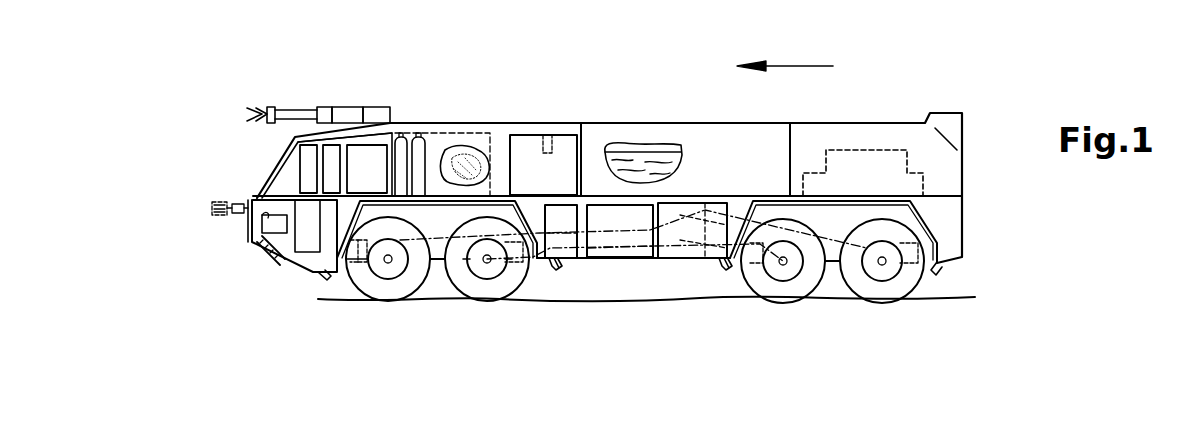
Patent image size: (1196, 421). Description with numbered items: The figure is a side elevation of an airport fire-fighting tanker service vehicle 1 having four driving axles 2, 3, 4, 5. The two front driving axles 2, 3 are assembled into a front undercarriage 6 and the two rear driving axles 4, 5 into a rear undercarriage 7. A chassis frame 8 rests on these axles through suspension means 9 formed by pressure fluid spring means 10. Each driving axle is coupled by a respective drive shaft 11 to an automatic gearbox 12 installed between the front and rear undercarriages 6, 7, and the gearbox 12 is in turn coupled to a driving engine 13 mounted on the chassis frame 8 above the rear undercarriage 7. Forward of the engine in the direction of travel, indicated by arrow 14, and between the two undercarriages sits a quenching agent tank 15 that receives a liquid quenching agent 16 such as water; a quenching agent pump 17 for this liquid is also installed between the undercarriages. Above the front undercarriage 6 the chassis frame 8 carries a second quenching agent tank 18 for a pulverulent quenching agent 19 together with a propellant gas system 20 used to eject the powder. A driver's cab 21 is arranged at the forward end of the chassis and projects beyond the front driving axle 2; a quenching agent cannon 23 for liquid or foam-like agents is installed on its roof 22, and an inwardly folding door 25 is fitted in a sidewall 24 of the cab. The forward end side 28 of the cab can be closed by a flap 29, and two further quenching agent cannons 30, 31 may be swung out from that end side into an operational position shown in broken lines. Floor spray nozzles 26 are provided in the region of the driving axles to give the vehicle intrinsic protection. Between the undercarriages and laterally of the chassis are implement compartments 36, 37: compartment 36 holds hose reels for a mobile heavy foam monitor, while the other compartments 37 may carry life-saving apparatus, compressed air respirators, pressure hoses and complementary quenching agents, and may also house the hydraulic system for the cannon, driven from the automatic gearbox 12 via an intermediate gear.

The airport fire-fighting tanker service vehicle 1 is at (250, 94).
The front driving axle 2 is at (388, 261).
The front driving axle 3 is at (487, 261).
The rear driving axle 4 is at (783, 263).
The rear driving axle 5 is at (882, 263).
The front undercarriage 6 is at (356, 304).
The rear undercarriage 7 is at (925, 280).
The chassis frame 8 is at (439, 262).
The suspension means 9 is at (351, 261).
The pressure fluid spring means 10 is at (353, 263).
The drive shaft 11 is at (608, 250).
The automatic gearbox 12 is at (686, 209).
The driving engine 13 is at (868, 152).
The direction of travel arrow 14 is at (790, 66).
The quenching agent tank 15 is at (604, 123).
The liquid quenching agent 16 is at (634, 154).
The quenching agent pump 17 is at (560, 131).
The quenching agent tank 18 is at (445, 156).
The pulverulent quenching agent 19 is at (468, 150).
The propellant gas system 20 is at (401, 156).
The driver's cab 21 is at (267, 174).
The roof 22 is at (312, 126).
The quenching agent cannon 23 is at (293, 114).
The sidewall 24 is at (262, 228).
The inwardly folding door 25 is at (308, 240).
The floor spray nozzles 26 is at (318, 276).
The forward end side 28 is at (226, 218).
The flap 29 is at (250, 213).
The quenching agent cannon 30 is at (217, 201).
The quenching agent cannon 31 is at (213, 210).
The implement compartment 36 is at (635, 260).
The implement compartment 37 is at (552, 262).